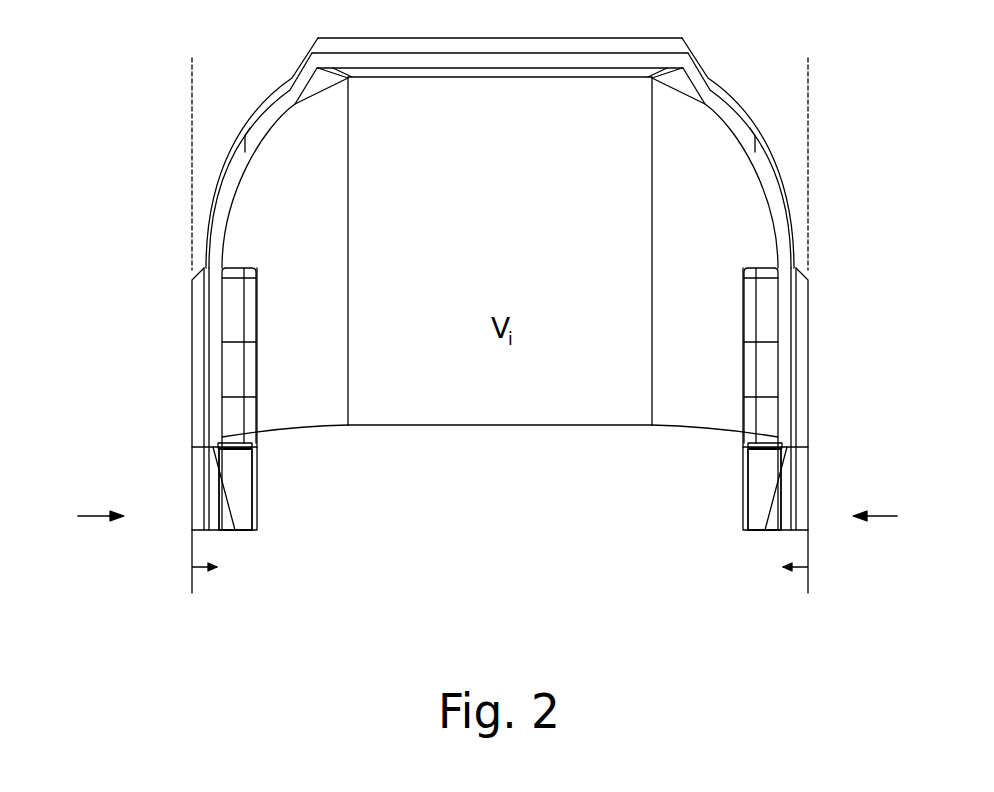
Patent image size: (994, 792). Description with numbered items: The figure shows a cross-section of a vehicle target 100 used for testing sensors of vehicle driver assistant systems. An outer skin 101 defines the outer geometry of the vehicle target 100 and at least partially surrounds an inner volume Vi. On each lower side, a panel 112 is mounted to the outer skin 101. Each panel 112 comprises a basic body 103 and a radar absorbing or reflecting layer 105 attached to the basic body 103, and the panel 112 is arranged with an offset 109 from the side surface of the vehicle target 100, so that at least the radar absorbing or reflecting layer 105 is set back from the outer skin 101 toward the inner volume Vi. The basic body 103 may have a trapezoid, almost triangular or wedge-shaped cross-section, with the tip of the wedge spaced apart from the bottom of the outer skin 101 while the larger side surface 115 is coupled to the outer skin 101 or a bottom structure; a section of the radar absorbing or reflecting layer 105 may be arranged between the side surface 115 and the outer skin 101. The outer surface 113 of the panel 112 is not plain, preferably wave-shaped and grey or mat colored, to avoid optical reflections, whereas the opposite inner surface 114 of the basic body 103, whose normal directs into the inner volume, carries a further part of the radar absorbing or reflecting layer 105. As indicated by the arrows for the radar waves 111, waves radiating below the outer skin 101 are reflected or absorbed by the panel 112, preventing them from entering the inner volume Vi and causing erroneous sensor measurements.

The vehicle target 100 is at (760, 153).
The outer skin 101 is at (535, 425).
The basic body 103 is at (242, 517).
The radar absorbing or reflecting layer 105 is at (775, 447).
The offset 109 is at (200, 567).
The radar waves 111 is at (90, 516).
The panel 112 is at (500, 536).
The outer surface 113 is at (215, 497).
The inner surface 114 is at (190, 82).
The side surface 115 is at (236, 445).